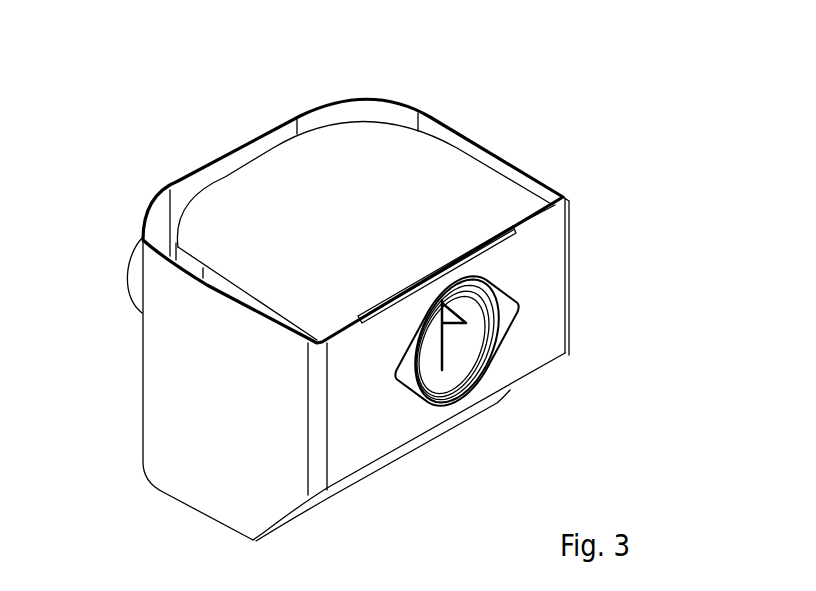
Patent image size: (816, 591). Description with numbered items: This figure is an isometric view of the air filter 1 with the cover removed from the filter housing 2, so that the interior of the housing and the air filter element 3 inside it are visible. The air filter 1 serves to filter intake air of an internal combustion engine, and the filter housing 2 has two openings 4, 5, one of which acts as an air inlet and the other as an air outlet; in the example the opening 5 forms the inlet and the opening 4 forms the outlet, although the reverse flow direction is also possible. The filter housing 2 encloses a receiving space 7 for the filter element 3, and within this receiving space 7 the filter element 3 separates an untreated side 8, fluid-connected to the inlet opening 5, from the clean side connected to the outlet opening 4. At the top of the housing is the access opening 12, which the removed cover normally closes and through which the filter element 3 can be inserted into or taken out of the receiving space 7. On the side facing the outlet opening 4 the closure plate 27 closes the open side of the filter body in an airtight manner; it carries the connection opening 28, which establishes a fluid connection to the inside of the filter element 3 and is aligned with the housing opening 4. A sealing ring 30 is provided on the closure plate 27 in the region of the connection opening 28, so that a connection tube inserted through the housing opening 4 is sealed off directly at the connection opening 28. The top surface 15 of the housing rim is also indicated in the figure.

The air filter 1 is at (605, 155).
The filter housing 2 is at (572, 272).
The filter element 3 is at (437, 138).
The opening 4 is at (490, 347).
The opening 5 is at (130, 257).
The receiving space 7 is at (160, 217).
The untreated side 8 is at (176, 196).
The access opening 12 is at (267, 143).
The top surface 15 is at (363, 150).
The closure plate 27 is at (433, 267).
The connection opening 28 is at (452, 372).
The sealing ring 30 is at (486, 322).